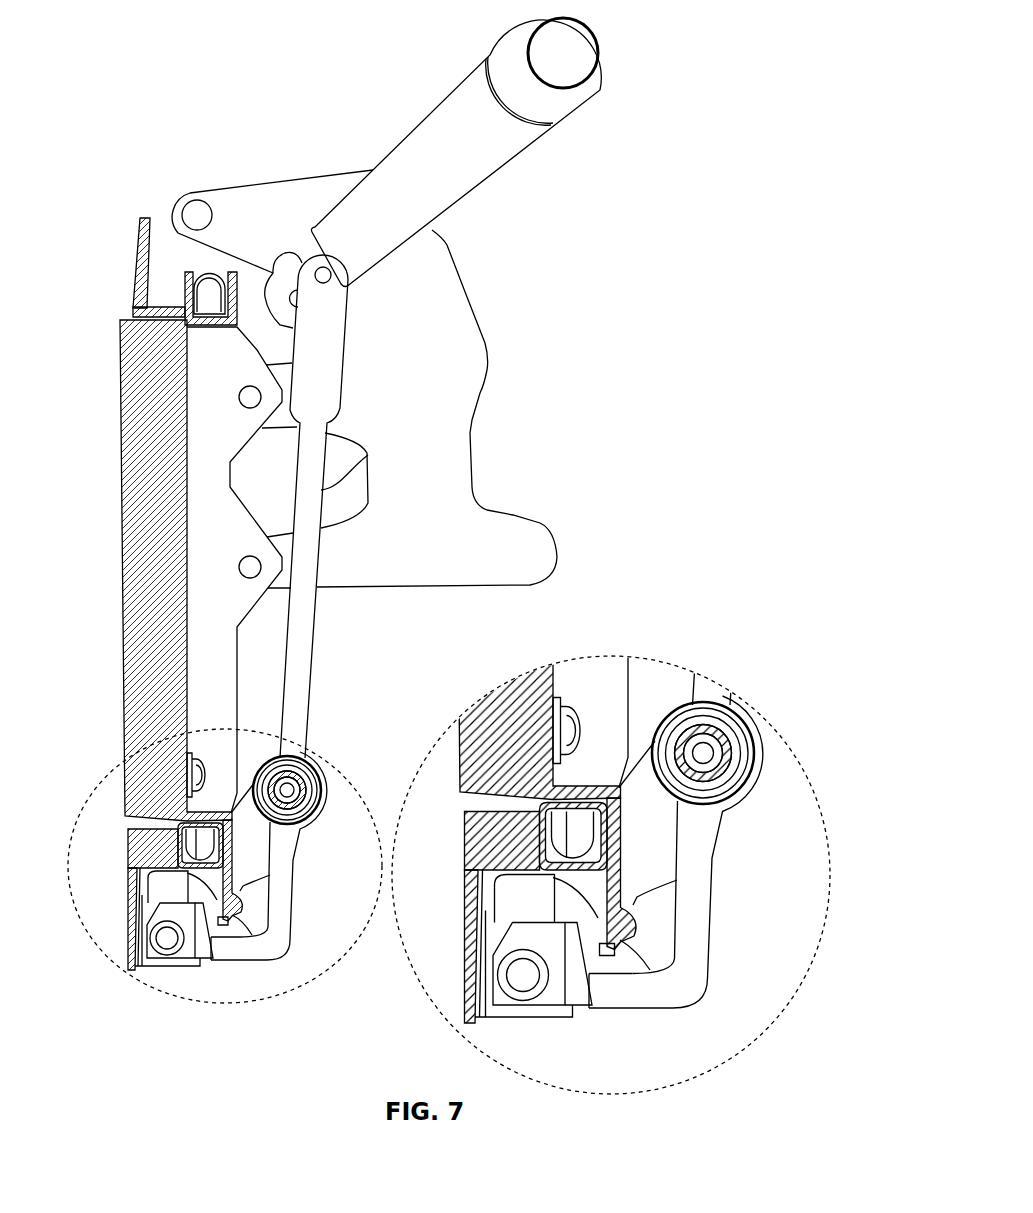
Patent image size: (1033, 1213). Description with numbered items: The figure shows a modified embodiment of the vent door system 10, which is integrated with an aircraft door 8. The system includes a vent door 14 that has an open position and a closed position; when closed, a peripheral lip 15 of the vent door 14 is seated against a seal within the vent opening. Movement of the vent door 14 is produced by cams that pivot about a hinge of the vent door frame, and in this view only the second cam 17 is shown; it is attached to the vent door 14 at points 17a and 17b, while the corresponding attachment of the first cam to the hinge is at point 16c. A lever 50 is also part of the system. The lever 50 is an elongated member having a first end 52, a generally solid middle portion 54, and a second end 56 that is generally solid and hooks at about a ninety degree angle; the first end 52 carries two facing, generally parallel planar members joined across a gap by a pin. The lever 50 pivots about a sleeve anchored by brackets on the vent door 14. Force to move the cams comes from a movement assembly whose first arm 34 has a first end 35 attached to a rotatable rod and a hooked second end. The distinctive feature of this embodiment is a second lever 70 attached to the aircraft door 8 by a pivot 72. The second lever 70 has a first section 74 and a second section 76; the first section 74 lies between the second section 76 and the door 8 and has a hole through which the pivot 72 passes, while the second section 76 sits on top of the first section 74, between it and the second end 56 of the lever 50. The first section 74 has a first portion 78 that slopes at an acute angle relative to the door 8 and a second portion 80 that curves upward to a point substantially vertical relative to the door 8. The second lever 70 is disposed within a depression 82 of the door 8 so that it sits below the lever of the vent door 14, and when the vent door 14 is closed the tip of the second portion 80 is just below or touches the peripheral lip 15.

The vent door system 10 is at (698, 100).
The first arm 34 is at (488, 193).
The first end of the first arm 35 is at (615, 38).
The attachment point of the first cam to the hinge 16c is at (197, 200).
The second cam 17 is at (490, 344).
The attachment point of the second cam to the vent door 17a is at (247, 386).
The attachment point of the second cam to the vent door 17b is at (248, 556).
The middle portion of the lever 54 is at (372, 462).
The lever 50 is at (316, 674).
The first end of the lever 52 is at (318, 255).
The vent door 14 is at (107, 583).
The aircraft door 8 is at (106, 805).
The depression 82 is at (174, 897).
The second end of the lever 56 is at (294, 910).
The peripheral lip 15 is at (262, 961).
The pivot 72 is at (150, 963).
The first section 74 is at (172, 968).
The second section 76 is at (206, 970).
The second lever 70 is at (217, 988).
The first portion 78 is at (588, 998).
The second portion 80 is at (623, 890).